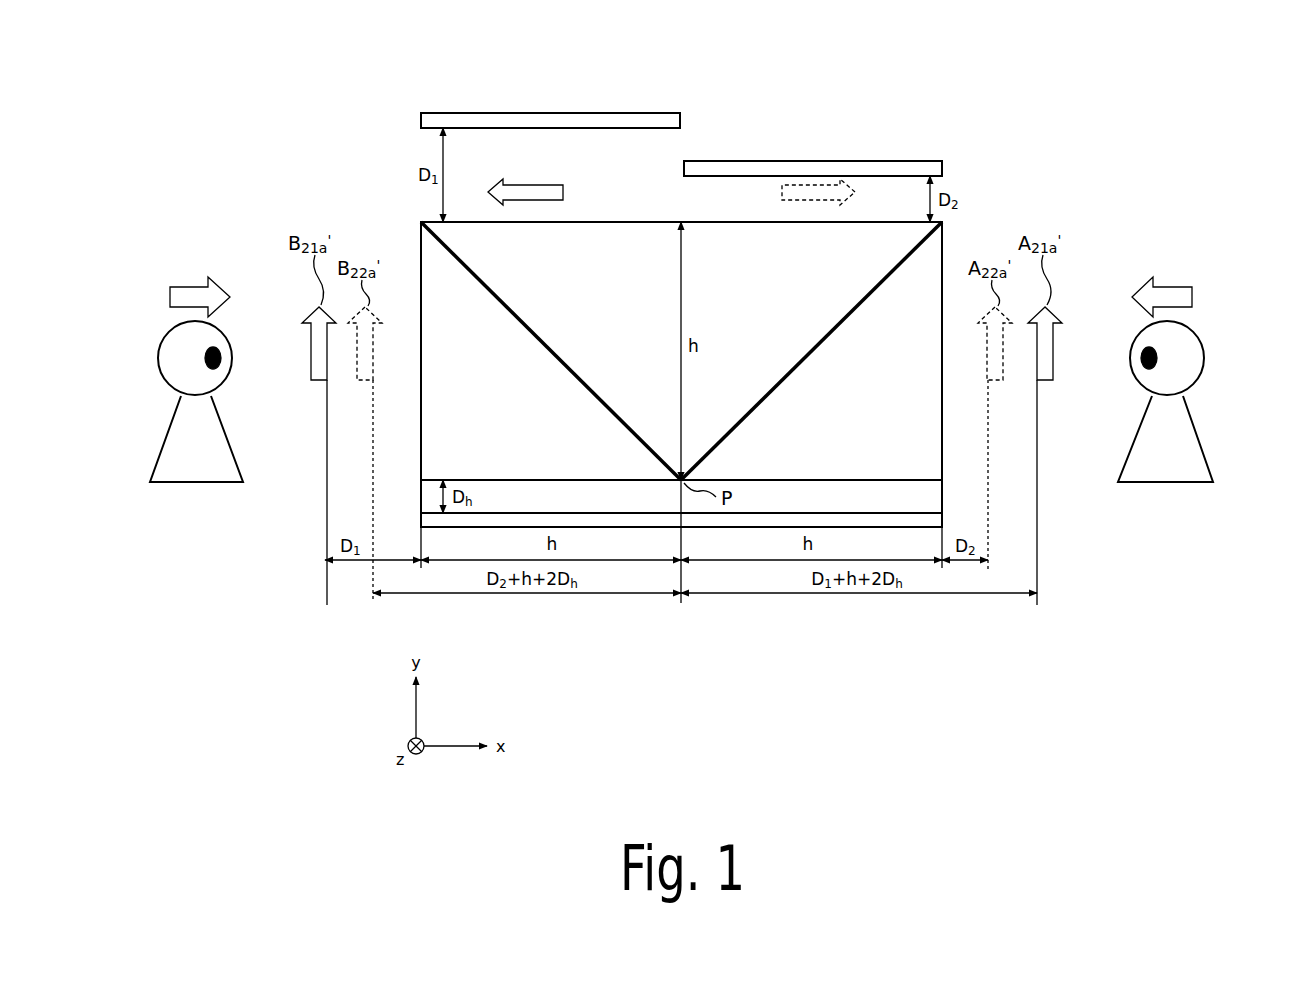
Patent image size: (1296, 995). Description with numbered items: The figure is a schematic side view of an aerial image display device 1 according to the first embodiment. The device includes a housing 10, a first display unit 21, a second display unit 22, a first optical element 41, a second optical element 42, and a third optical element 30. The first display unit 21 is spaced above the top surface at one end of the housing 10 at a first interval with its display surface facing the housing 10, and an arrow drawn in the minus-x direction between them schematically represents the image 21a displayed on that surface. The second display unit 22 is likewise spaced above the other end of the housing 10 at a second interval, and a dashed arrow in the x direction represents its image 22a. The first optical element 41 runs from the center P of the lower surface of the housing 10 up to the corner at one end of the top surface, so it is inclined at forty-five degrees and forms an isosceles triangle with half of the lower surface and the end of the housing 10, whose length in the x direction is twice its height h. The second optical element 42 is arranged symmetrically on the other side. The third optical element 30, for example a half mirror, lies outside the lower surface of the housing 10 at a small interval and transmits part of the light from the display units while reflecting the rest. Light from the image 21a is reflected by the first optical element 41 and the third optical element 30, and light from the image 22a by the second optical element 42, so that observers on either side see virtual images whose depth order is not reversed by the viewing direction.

The aerial image display device 1 is at (707, 88).
The housing 10 is at (944, 222).
The first display unit 21 is at (557, 113).
The second display unit 22 is at (816, 161).
The image 21a is at (563, 192).
The image 22a is at (782, 190).
The third optical element 30 is at (546, 510).
The first optical element 41 is at (525, 321).
The second optical element 42 is at (836, 322).